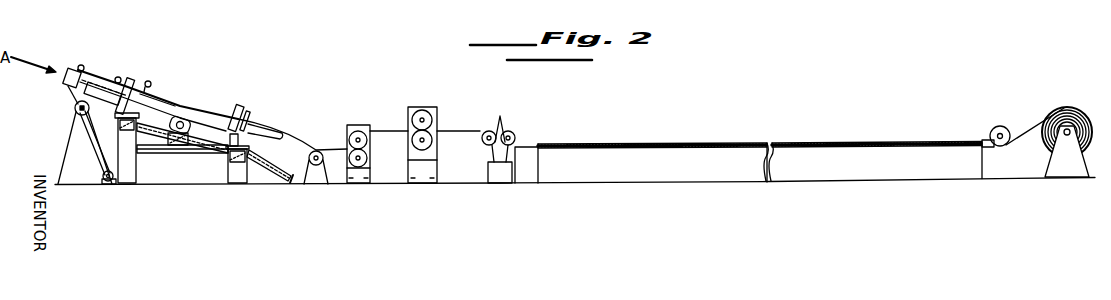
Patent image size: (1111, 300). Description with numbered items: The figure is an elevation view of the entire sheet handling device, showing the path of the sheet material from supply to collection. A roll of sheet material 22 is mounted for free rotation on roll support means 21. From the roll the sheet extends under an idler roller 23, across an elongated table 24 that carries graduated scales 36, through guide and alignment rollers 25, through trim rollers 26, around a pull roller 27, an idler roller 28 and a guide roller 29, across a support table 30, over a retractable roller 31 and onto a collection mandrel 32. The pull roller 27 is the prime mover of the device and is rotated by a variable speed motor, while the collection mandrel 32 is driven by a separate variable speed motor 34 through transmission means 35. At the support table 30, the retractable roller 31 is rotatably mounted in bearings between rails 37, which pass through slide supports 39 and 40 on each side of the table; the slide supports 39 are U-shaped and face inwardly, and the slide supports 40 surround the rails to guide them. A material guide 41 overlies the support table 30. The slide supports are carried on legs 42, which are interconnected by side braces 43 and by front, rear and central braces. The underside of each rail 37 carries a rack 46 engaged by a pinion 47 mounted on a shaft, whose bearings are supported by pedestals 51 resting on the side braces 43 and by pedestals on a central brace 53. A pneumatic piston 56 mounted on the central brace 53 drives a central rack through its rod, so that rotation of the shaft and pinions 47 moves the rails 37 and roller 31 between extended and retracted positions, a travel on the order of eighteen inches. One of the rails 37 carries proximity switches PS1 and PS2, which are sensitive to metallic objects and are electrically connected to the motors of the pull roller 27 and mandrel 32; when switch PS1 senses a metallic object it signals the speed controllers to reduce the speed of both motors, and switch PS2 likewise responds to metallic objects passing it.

The proximity switch PS1 is at (121, 79).
The proximity switch PS2 is at (78, 66).
The roll support means 21 is at (1064, 160).
The roll of sheet material 22 is at (1058, 110).
The idler roller 23 is at (997, 130).
The elongated table 24 is at (842, 174).
The guide and alignment rollers 25 is at (501, 122).
The trim rollers 26 is at (432, 138).
The pull roller 27 is at (361, 133).
The idler roller 28 is at (364, 160).
The guide roller 29 is at (313, 151).
The support table 30 is at (191, 97).
The retractable roller 31 is at (65, 87).
The collection mandrel 32 is at (74, 108).
The variable speed motor 34 is at (113, 183).
The transmission means 35 is at (80, 128).
The graduated scales 36 is at (606, 144).
The rails 37 is at (86, 65).
The slide supports 39 is at (130, 88).
The slide supports 40 is at (236, 116).
The material guide 41 is at (276, 133).
The legs 42 is at (132, 143).
The side braces 43 is at (192, 150).
The rack 46 is at (162, 110).
The pinions 47 is at (185, 118).
The pedestals 51 is at (182, 152).
The central brace 53 is at (158, 150).
The pneumatic piston 56 is at (256, 154).